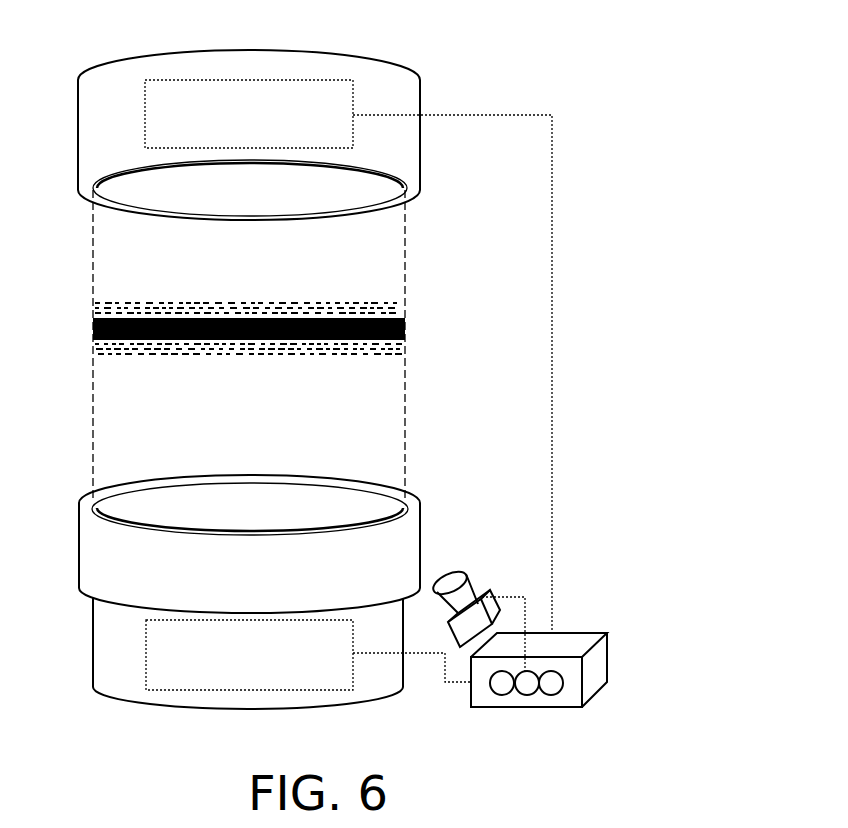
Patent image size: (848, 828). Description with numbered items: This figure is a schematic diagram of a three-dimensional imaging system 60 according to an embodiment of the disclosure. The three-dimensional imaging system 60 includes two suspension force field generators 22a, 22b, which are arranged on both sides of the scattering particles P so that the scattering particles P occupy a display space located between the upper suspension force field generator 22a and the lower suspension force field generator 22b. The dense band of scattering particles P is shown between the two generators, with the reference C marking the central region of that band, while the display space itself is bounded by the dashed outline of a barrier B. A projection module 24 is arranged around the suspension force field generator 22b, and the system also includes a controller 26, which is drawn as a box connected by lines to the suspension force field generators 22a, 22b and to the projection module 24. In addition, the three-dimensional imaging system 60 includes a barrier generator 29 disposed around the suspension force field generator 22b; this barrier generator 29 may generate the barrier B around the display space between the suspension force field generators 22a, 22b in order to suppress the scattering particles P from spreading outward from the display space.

The suspension force field generator 22a is at (209, 80).
The suspension force field generator 22b is at (210, 693).
The projection module 24 is at (459, 575).
The controller 26 is at (601, 660).
The barrier generator 29 is at (91, 548).
The three-dimensional imaging system 60 is at (341, 391).
The scattering particles P is at (128, 304).
The plasma core C is at (93, 330).
The barrier B is at (93, 400).